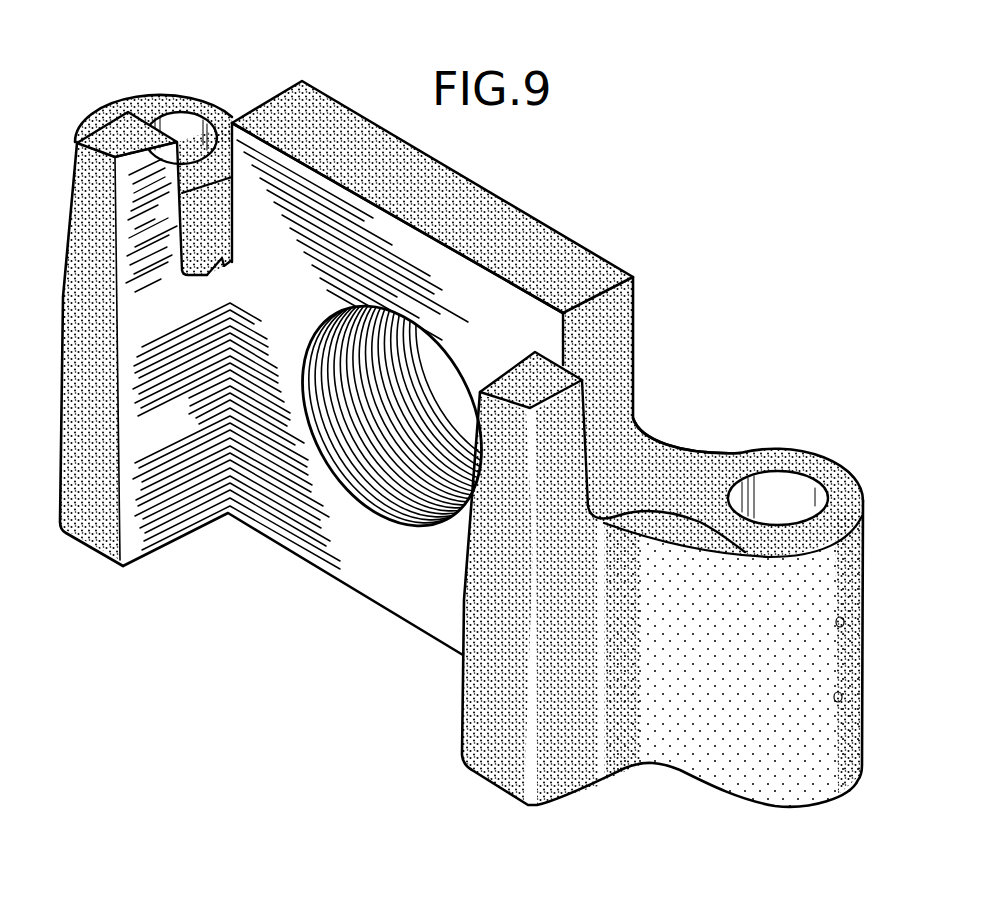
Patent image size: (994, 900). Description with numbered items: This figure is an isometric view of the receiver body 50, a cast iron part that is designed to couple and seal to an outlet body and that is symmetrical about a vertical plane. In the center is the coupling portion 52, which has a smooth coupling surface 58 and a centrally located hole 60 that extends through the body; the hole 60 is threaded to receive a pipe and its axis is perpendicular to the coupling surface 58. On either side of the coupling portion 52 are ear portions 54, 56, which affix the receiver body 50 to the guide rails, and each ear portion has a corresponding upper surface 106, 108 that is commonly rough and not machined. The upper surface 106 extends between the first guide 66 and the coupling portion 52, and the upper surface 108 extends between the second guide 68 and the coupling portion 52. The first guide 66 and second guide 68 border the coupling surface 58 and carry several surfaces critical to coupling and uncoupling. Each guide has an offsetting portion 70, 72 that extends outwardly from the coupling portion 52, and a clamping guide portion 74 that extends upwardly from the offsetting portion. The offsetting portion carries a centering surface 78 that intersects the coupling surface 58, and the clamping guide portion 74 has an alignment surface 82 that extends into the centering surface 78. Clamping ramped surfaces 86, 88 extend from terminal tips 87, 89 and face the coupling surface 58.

The receiver body 50 is at (126, 704).
The coupling portion 52 is at (493, 341).
The ear portion 54 is at (224, 181).
The ear portion 56 is at (733, 579).
The coupling surface 58 is at (292, 288).
The hole 60 is at (387, 479).
The first guide 66 is at (152, 338).
The second guide 68 is at (662, 596).
The offsetting portion 70 is at (52, 497).
The offsetting portion 72 is at (609, 596).
The clamping guide portion 74 is at (152, 338).
The centering surface 78 is at (170, 455).
The alignment surface 82 is at (166, 240).
The clamping ramped surface 86 is at (240, 231).
The terminal tip 87 is at (524, 370).
The clamping ramped surface 88 is at (635, 418).
The terminal tip 89 is at (115, 131).
The upper surface 106 is at (255, 291).
The upper surface 108 is at (678, 468).